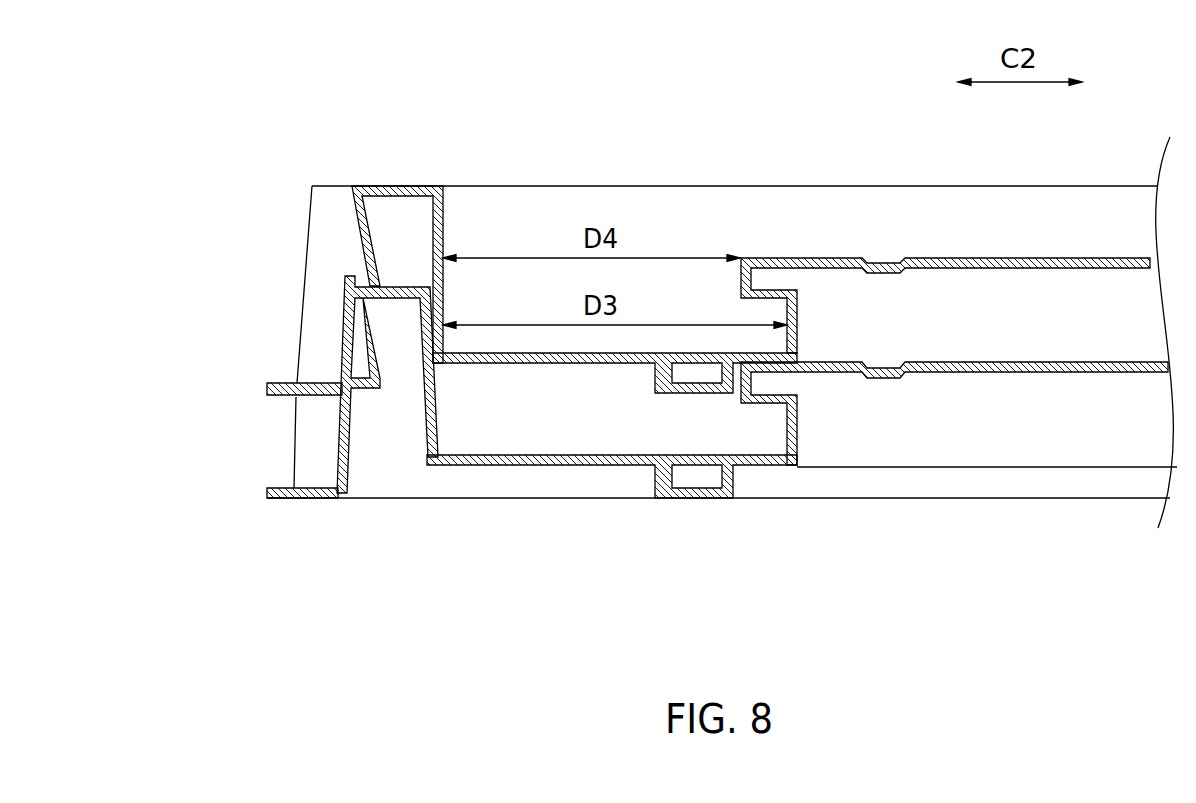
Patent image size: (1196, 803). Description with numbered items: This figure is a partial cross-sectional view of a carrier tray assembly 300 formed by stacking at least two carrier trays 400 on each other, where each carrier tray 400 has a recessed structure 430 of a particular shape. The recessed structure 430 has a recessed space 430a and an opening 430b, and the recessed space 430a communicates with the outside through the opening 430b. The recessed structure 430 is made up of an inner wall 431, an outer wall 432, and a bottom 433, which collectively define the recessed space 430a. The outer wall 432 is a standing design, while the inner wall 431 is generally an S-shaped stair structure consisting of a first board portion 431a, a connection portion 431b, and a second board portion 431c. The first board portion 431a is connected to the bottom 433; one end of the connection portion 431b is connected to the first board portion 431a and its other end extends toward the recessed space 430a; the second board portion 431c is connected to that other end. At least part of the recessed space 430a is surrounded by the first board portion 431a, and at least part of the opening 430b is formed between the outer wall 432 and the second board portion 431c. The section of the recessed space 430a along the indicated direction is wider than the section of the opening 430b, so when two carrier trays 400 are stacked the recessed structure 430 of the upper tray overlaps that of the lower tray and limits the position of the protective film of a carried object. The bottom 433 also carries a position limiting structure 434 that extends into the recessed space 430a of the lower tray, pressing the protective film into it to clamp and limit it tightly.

The carrier tray assembly 300 is at (262, 60).
The carrier tray 400 is at (250, 265).
The recessed structure 430 is at (600, 487).
The recessed space 430a is at (662, 435).
The opening 430b is at (740, 240).
The inner wall 431 is at (810, 306).
The first board portion 431a is at (797, 432).
The connection portion 431b is at (762, 405).
The second board portion 431c is at (752, 383).
The outer wall 432 is at (433, 245).
The bottom 433 is at (532, 466).
The position limiting structure 434 is at (697, 392).